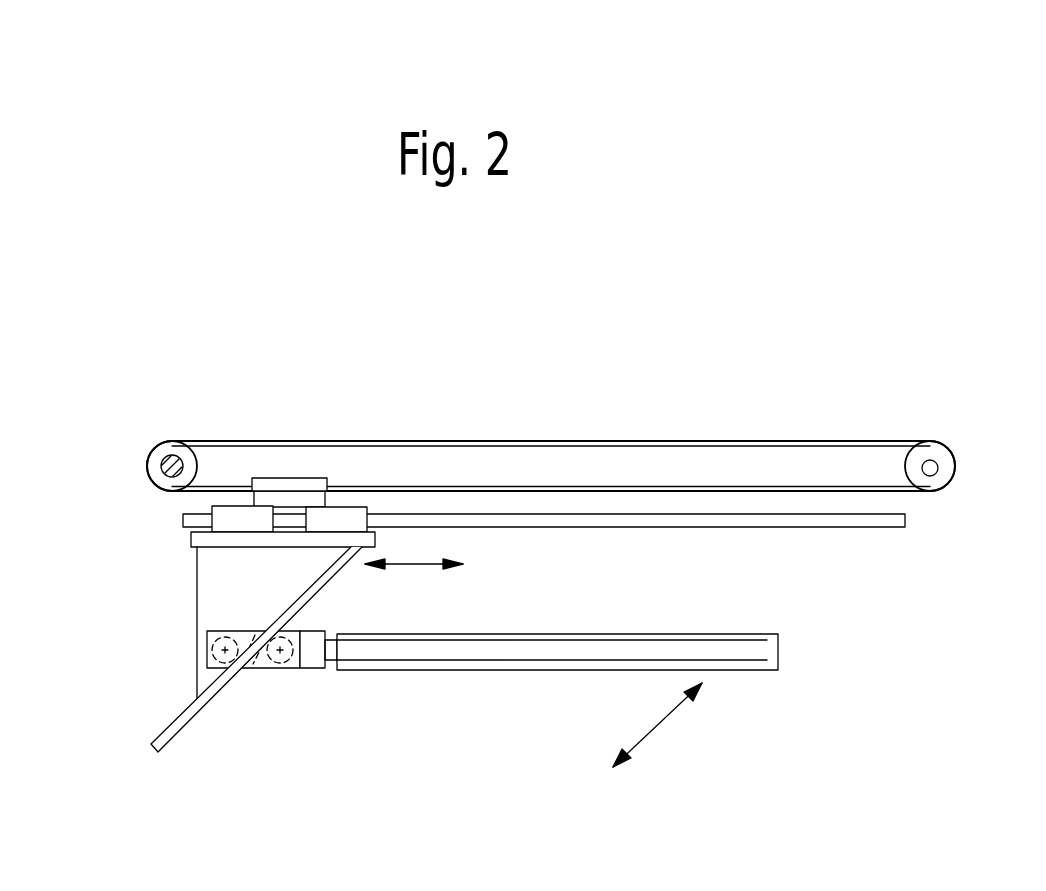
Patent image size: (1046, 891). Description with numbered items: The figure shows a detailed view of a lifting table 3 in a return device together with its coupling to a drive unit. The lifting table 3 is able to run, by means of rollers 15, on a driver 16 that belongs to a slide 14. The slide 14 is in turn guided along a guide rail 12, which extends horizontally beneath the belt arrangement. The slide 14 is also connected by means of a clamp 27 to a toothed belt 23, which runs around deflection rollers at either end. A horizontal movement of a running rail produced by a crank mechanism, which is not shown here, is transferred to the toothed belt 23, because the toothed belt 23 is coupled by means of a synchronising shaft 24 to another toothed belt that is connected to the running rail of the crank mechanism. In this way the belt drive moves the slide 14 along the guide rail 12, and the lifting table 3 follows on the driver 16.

The lifting table 3 is at (772, 655).
The guide rail 12 is at (885, 523).
The slide 14 is at (193, 538).
The rollers 15 is at (212, 650).
The driver 16 is at (188, 715).
The toothed belt 23 is at (495, 440).
The synchronising shaft 24 is at (158, 461).
The clamp 27 is at (287, 482).